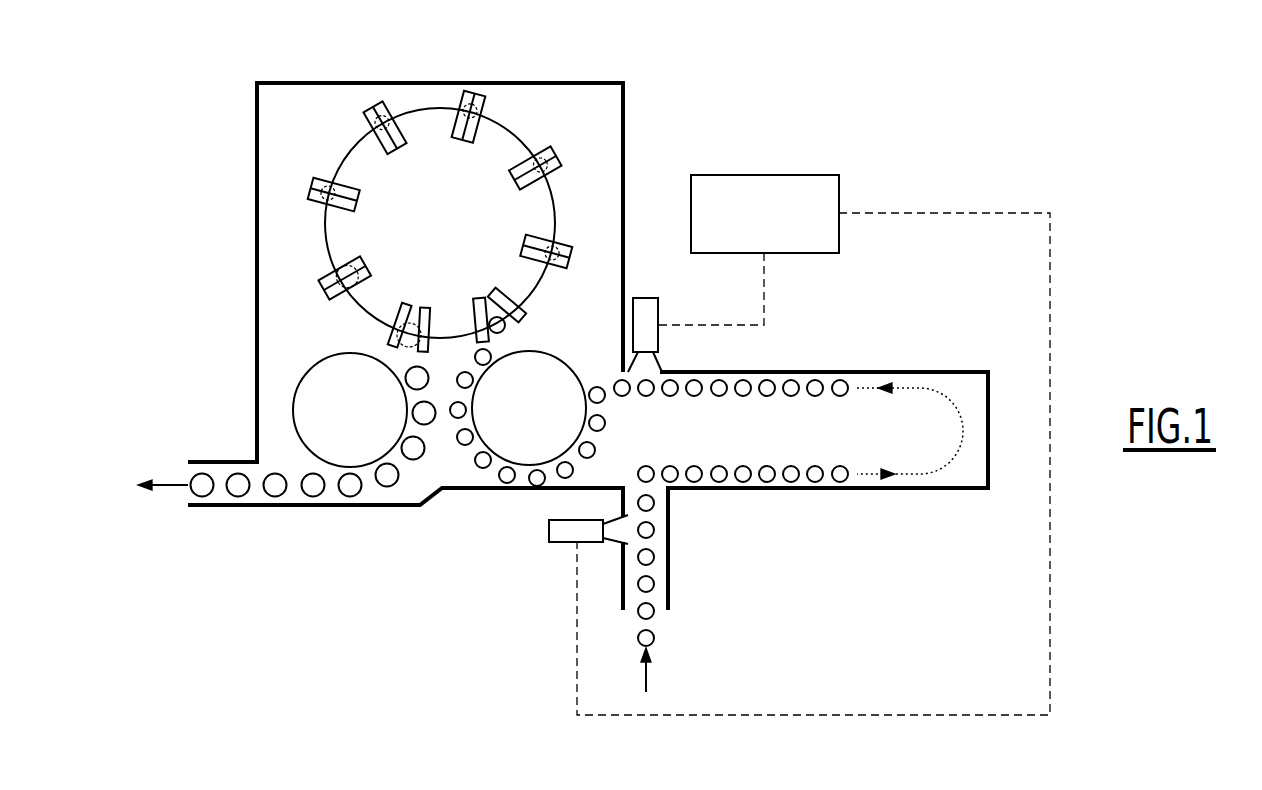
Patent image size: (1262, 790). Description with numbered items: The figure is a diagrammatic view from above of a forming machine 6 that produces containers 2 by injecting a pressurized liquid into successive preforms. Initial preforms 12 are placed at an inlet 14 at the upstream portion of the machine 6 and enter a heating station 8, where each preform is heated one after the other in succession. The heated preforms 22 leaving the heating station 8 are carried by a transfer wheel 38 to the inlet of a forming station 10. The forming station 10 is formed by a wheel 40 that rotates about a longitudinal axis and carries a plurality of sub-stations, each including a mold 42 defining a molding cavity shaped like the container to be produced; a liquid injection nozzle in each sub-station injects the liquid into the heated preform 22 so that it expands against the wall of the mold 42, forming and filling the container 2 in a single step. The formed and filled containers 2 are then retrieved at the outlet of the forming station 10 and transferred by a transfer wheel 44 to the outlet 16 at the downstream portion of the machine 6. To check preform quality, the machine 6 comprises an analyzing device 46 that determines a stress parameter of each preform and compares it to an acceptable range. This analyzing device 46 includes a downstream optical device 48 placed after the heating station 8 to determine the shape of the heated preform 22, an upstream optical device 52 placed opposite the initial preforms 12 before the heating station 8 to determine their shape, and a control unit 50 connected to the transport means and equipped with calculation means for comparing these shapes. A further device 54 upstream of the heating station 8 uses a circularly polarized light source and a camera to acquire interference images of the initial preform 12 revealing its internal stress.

The container 2 is at (277, 497).
The forming machine 6 is at (860, 178).
The heating station 8 is at (826, 425).
The forming station 10 is at (428, 118).
The initial preform 12 is at (654, 530).
The inlet 14 is at (683, 593).
The outlet 16 is at (216, 508).
The heated preform 22 is at (649, 396).
The transfer wheel 38 is at (555, 366).
The wheel 40 is at (440, 223).
The mold 42 is at (482, 104).
The transfer wheel 44 is at (302, 404).
The analyzing device 46 is at (577, 407).
The downstream optical device 48 is at (658, 303).
The control unit 50 is at (813, 445).
The upstream optical device 52 is at (527, 529).
The device 54 is at (549, 531).